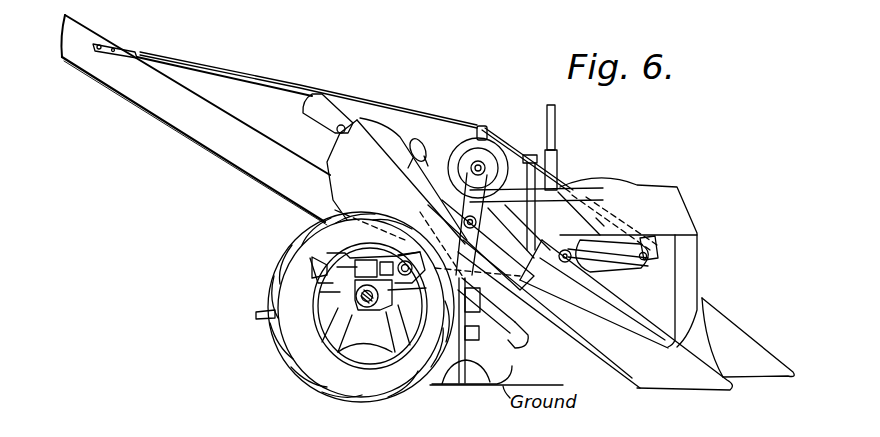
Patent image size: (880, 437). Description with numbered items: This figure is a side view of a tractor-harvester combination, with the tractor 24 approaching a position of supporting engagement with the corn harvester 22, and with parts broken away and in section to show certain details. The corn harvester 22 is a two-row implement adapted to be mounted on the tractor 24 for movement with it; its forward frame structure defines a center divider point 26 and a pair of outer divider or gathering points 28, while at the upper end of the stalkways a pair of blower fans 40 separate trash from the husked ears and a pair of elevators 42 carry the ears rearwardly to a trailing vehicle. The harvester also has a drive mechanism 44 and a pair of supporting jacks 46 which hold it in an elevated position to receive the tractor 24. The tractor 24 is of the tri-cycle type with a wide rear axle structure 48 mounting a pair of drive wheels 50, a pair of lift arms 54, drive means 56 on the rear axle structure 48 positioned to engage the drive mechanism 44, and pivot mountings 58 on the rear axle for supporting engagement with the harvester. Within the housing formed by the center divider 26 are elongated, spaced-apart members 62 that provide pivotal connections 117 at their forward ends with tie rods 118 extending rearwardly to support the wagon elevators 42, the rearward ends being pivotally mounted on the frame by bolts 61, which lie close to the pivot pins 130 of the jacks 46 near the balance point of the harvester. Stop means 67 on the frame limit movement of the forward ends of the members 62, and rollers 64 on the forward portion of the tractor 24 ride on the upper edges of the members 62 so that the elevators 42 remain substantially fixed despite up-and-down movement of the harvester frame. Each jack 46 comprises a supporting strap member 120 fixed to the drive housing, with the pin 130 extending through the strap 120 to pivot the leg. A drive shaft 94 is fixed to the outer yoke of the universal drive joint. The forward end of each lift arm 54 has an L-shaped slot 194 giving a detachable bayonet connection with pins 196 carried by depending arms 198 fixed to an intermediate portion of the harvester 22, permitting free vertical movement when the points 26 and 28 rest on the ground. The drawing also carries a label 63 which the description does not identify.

The corn harvester 22 is at (652, 214).
The tractor 24 is at (573, 187).
The center divider point 26 is at (741, 332).
The outer divider or gathering points 28 is at (677, 385).
The blower fans 40 is at (466, 144).
The elevators 42 is at (207, 152).
The drive mechanism 44 is at (392, 258).
The supporting jacks 46 is at (466, 385).
The rear axle structure 48 is at (372, 338).
The drive wheels 50 is at (288, 338).
The lift arms 54 is at (528, 362).
The drive means 56 is at (310, 278).
The pivot mountings 58 is at (388, 291).
The pivot bolts 61 is at (557, 274).
The elongated spaced-apart members 62 is at (612, 266).
The roller 63 is at (393, 307).
The rollers 64 is at (614, 222).
The stop means 67 is at (648, 248).
The drive shaft 94 is at (353, 250).
The pivotal connections 117 is at (647, 262).
The tie rods 118 is at (262, 72).
The supporting strap member 120 is at (489, 231).
The pivot pin 130 is at (594, 294).
The L-shaped slot 194 is at (491, 305).
The pins 196 is at (590, 345).
The depending arms 198 is at (572, 330).